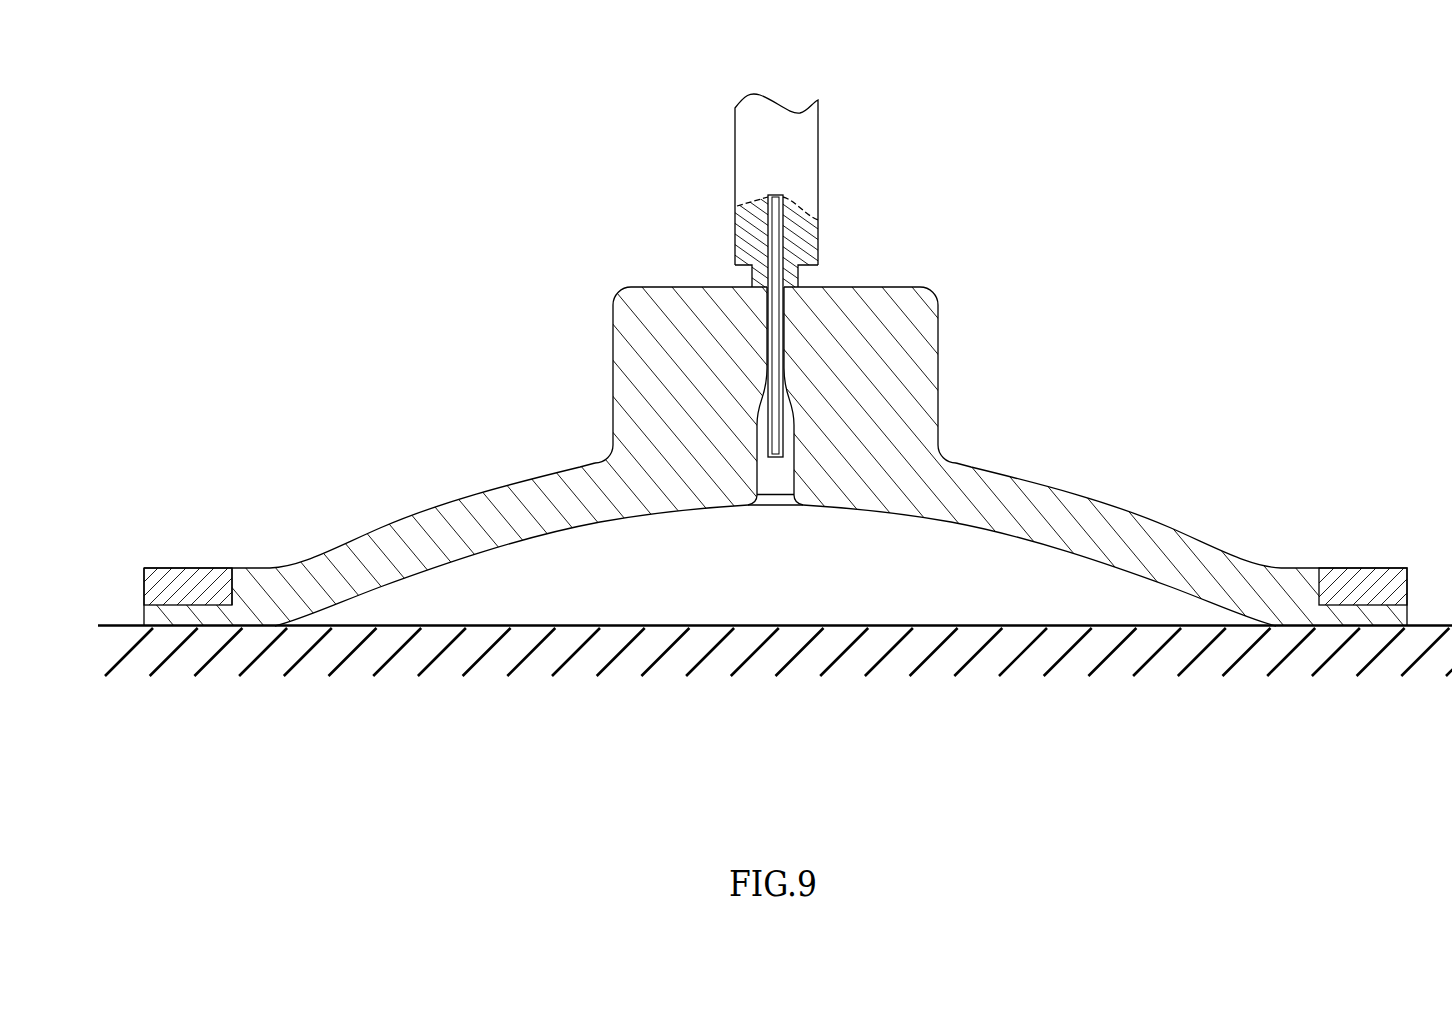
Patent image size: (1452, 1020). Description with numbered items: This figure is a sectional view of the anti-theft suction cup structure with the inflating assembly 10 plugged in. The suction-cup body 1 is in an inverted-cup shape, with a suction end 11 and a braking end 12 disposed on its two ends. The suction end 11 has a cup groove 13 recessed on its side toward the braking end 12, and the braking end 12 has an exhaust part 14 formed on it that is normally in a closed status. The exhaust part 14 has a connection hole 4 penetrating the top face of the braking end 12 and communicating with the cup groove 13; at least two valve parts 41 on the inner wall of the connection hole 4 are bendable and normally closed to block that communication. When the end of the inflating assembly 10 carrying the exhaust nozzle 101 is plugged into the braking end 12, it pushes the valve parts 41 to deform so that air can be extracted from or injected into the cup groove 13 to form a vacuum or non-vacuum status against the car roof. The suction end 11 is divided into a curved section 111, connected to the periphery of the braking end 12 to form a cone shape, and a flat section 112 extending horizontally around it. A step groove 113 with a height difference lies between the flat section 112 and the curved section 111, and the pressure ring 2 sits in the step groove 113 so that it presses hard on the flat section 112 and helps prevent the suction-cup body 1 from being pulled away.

The suction-cup body 1 is at (726, 442).
The pressure ring 2 is at (202, 575).
The connection hole 4 is at (744, 376).
The valve part 41 is at (785, 330).
The inflating assembly 10 is at (775, 170).
The suction end 11 is at (743, 691).
The braking end 12 is at (945, 378).
The cup groove 13 is at (997, 586).
The exhaust part 14 is at (740, 280).
The exhaust nozzle 101 is at (768, 448).
The curved section 111 is at (397, 553).
The flat section 112 is at (197, 607).
The step groove 113 is at (162, 608).